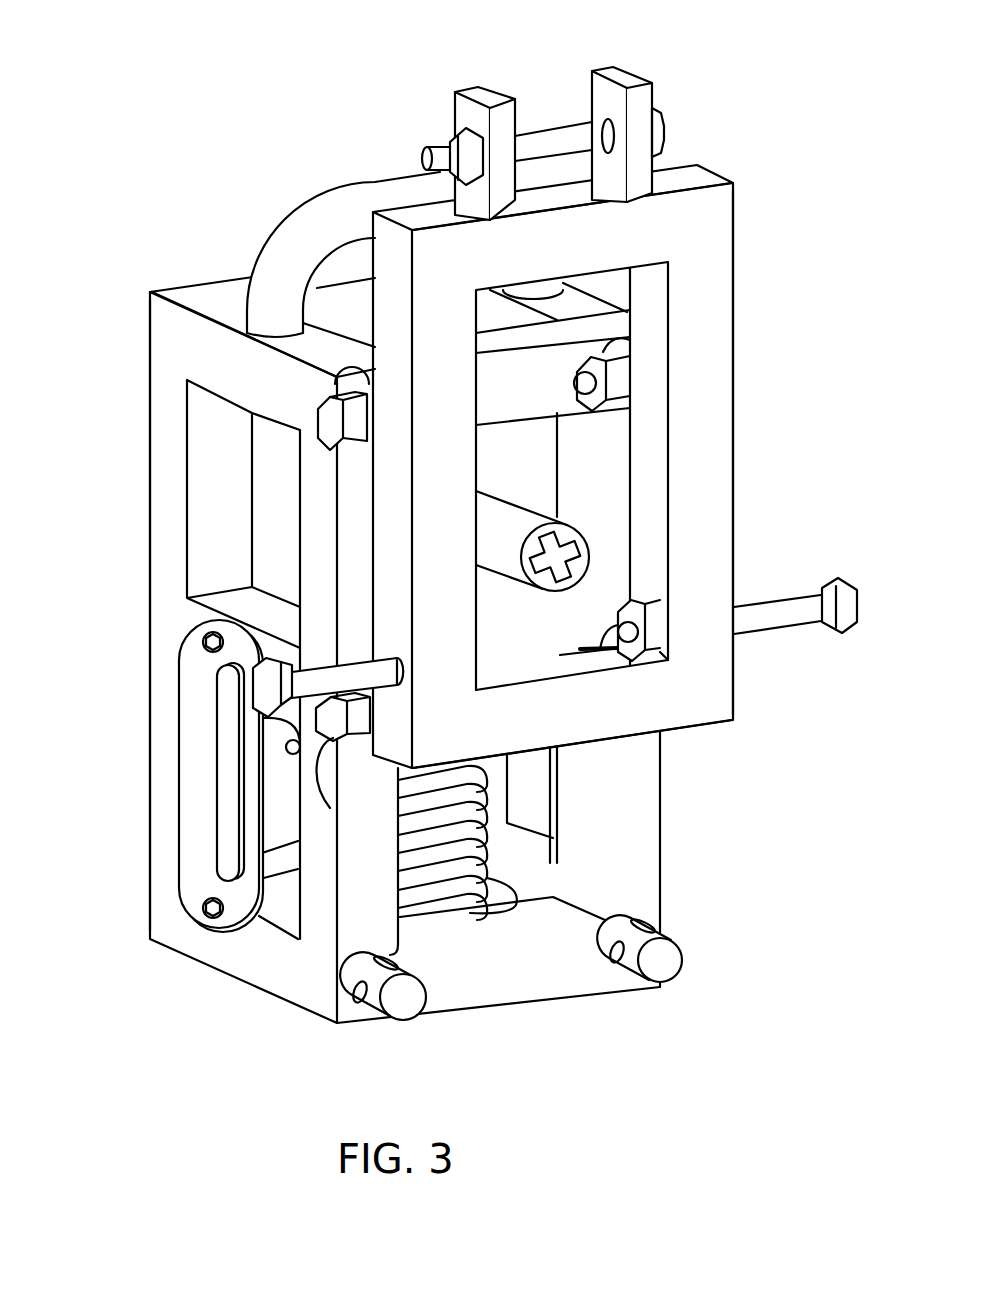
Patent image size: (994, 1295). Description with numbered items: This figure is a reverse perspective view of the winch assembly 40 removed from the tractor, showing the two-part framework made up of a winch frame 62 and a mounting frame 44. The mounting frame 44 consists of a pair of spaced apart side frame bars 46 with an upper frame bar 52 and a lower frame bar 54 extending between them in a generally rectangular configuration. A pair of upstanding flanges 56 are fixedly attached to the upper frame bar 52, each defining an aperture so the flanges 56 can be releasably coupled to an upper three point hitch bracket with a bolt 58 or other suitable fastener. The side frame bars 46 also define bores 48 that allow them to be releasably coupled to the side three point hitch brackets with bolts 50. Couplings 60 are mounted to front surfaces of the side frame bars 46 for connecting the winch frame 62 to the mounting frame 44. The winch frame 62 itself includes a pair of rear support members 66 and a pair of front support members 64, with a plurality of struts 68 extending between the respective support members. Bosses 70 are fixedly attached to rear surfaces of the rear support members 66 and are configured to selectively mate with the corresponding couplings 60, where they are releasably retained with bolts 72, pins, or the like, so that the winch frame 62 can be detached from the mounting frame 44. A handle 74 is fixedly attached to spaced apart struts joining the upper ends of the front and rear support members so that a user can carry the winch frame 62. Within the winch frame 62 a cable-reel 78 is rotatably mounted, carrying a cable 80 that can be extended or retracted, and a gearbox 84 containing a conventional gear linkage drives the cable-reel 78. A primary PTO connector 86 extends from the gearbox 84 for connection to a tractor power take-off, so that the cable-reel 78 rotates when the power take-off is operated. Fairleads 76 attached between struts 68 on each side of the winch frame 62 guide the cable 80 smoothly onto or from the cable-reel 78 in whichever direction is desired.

The assembly 40 is at (185, 95).
The mounting frame 44 is at (757, 213).
The side frame bars 46 is at (734, 450).
The bores 48 is at (397, 652).
The bolts 50 is at (297, 650).
The upper frame bar 52 is at (575, 256).
The lower frame bar 54 is at (582, 728).
The upstanding flanges 56 is at (454, 105).
The bolt 58 is at (560, 123).
The couplings 60 is at (358, 372).
The winch frame 62 is at (133, 283).
The front support members 64 is at (148, 427).
The rear support members 66 is at (660, 768).
The struts 68 is at (190, 604).
The bosses 70 is at (408, 1025).
The bolts 72 is at (315, 423).
The handle 74 is at (310, 200).
The fairleads 76 is at (175, 820).
The cable-reel 78 is at (478, 897).
The cable 80 is at (555, 836).
The gearbox 84 is at (267, 503).
The primary PTO connector 86 is at (513, 493).